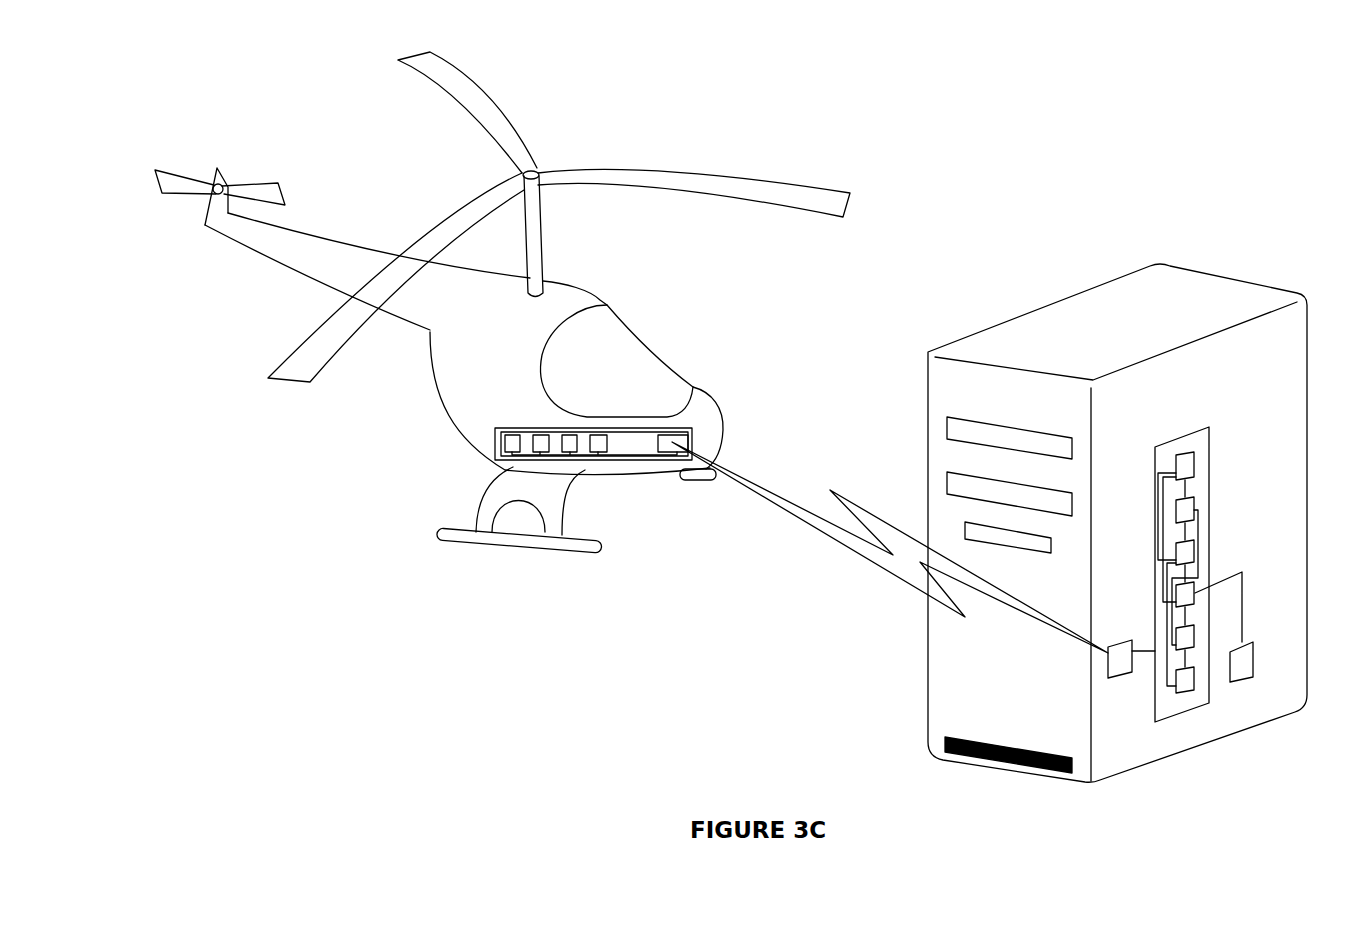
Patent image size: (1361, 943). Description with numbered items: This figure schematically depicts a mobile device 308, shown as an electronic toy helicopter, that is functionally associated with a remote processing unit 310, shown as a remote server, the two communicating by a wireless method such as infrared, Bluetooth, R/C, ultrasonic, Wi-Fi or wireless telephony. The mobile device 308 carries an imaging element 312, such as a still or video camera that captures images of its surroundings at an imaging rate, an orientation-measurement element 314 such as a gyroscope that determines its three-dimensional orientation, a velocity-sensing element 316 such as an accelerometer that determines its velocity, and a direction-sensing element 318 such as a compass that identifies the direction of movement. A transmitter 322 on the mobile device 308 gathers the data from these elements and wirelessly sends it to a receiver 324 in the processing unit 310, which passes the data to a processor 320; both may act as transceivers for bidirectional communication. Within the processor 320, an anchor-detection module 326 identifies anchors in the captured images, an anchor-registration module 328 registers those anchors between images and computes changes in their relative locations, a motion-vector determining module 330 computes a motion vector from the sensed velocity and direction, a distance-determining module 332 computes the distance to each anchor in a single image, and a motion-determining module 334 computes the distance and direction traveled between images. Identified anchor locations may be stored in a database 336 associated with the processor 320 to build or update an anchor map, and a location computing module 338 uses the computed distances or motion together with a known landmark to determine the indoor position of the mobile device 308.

The mobile device 308 is at (247, 111).
The remote processing unit 310 is at (1025, 233).
The imaging element 312 is at (505, 441).
The orientation-measurement element 314 is at (533, 445).
The velocity-sensing element 316 is at (562, 445).
The direction-sensing element 318 is at (607, 443).
The processor 320 is at (1177, 439).
The transmitter 322 is at (675, 453).
The receiver 324 is at (1123, 678).
The anchor-detection module 326 is at (1195, 593).
The anchor-registration module 328 is at (1195, 633).
The motion-vector determining module 330 is at (1195, 465).
The distance-determining module 332 is at (1195, 500).
The motion-determining module 334 is at (1195, 550).
The database 336 is at (1243, 682).
The location computing module 338 is at (1187, 693).